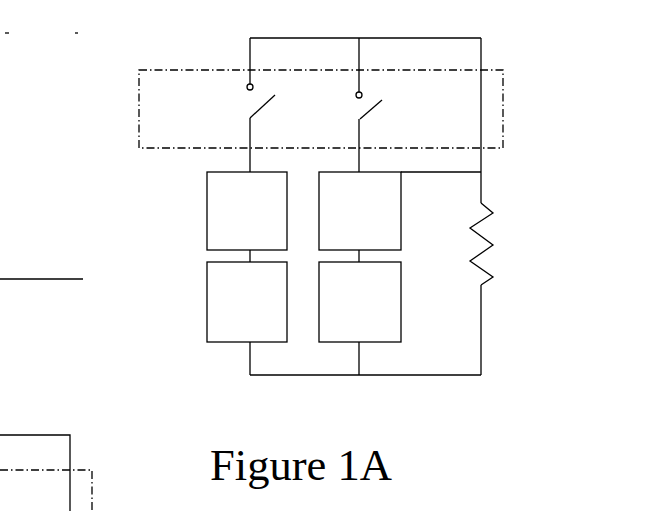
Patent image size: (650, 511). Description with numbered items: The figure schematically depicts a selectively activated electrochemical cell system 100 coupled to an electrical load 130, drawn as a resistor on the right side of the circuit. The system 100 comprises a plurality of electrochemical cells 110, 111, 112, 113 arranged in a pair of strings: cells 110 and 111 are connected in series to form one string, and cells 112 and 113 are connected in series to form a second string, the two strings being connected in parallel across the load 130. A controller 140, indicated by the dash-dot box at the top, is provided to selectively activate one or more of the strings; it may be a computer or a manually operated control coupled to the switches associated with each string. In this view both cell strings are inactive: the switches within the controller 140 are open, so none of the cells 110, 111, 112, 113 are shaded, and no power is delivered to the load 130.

The selectively activated electrochemical cell system 100 is at (163, 420).
The electrochemical cell 110 is at (247, 211).
The electrochemical cell 111 is at (247, 302).
The electrochemical cell 112 is at (360, 211).
The electrochemical cell 113 is at (360, 302).
The electrical load 130 is at (516, 244).
The controller 140 is at (286, 130).